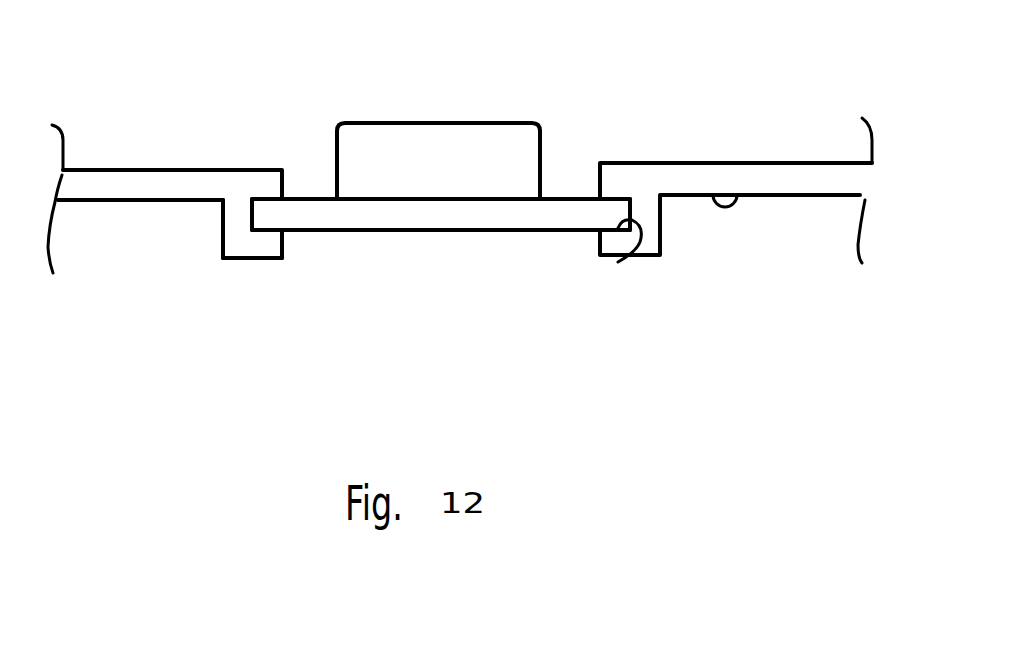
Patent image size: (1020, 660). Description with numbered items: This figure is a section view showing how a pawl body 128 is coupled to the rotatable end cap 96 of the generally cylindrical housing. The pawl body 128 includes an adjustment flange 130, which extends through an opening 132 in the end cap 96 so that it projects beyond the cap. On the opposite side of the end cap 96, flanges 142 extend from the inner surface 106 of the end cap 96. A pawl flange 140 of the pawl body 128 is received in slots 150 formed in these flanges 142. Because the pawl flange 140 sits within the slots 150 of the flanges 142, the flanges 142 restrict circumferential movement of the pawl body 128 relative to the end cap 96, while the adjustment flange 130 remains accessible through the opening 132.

The end cap 96 is at (163, 187).
The inner surface 106 is at (740, 190).
The adjustment flange 130 is at (388, 158).
The opening 132 is at (567, 173).
The pawl flange 140 is at (477, 232).
The pawl body 128 is at (412, 212).
The flange 142 is at (243, 240).
The slot 150 is at (618, 262).